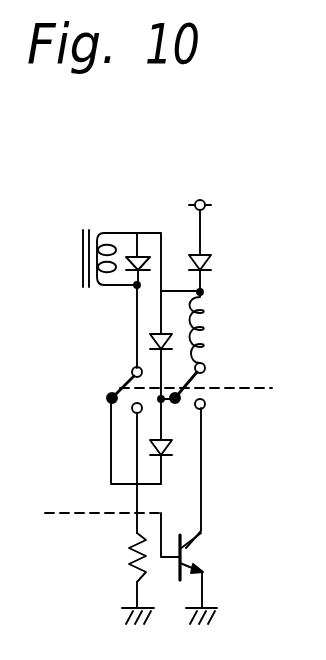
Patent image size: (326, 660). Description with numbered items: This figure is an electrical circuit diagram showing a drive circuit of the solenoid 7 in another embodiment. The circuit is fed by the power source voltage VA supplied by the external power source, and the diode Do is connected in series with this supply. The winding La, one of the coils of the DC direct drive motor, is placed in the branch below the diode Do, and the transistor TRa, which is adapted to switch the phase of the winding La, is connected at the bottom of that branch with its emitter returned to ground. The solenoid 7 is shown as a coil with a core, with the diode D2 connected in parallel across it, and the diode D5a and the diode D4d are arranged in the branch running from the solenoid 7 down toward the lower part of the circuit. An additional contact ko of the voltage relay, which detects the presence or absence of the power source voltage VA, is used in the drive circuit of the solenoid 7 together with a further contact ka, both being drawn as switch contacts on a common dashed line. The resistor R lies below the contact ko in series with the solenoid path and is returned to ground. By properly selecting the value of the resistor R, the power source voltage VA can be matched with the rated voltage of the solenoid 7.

The solenoid 7 is at (87, 225).
The diode D2 is at (141, 232).
The power source voltage VA is at (204, 198).
The diode Do is at (210, 256).
The winding La is at (205, 320).
The diode D5a is at (158, 339).
The additional contact ko is at (114, 385).
The relay contact ka is at (195, 390).
The diode D4d is at (148, 454).
The resistor R is at (130, 562).
The transistor TRa is at (203, 553).